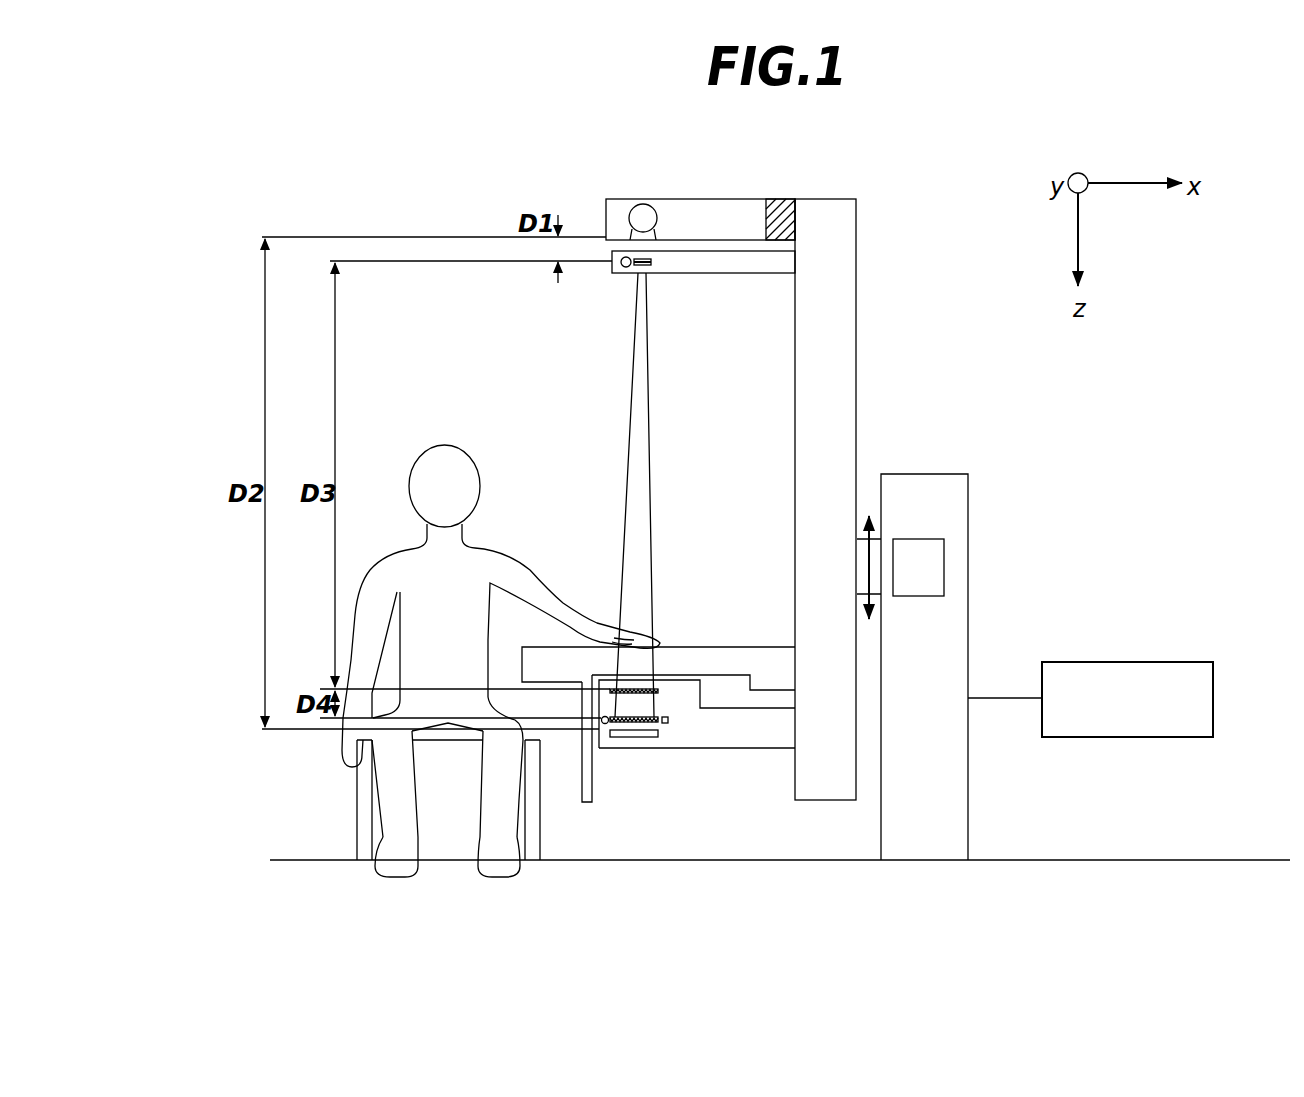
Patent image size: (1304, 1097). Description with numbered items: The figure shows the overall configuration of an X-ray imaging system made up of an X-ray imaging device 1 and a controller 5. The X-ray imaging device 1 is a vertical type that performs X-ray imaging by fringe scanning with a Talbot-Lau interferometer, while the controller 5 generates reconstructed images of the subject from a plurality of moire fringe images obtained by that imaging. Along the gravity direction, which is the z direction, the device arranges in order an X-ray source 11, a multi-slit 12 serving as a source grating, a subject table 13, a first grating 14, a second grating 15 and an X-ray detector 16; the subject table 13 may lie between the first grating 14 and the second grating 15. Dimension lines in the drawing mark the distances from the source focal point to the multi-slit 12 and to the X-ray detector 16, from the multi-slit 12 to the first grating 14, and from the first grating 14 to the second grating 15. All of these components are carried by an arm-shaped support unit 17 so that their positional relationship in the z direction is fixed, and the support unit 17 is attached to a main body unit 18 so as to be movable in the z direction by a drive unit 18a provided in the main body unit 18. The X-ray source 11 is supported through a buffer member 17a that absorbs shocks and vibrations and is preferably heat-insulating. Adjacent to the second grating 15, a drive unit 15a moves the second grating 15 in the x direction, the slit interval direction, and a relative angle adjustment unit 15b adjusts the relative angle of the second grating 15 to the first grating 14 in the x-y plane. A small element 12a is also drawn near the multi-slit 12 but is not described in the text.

The X-ray imaging device 1 is at (987, 378).
The controller 5 is at (1173, 662).
The X-ray source 11 is at (653, 203).
The multi-slit 12 is at (635, 266).
The collimator drive 12a is at (620, 268).
The subject table 13 is at (735, 653).
The first grating 14 is at (657, 688).
The second grating 15 is at (658, 721).
The drive unit 15a is at (604, 723).
The relative angle adjustment unit 15b is at (668, 719).
The X-ray detector 16 is at (653, 738).
The support unit 17 is at (852, 297).
The buffer member 17a is at (777, 207).
The main body unit 18 is at (962, 518).
The drive unit 18a is at (943, 567).